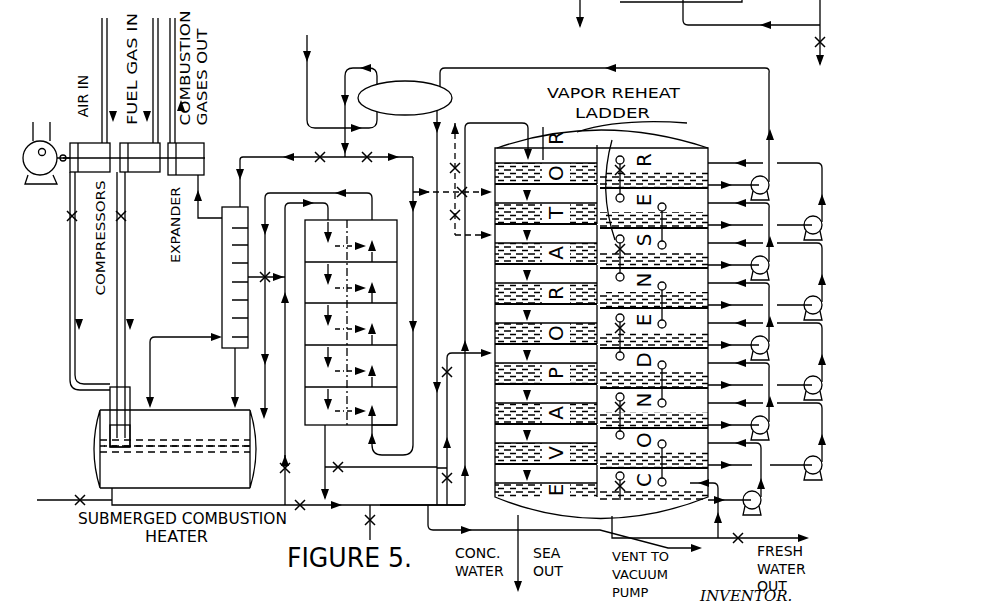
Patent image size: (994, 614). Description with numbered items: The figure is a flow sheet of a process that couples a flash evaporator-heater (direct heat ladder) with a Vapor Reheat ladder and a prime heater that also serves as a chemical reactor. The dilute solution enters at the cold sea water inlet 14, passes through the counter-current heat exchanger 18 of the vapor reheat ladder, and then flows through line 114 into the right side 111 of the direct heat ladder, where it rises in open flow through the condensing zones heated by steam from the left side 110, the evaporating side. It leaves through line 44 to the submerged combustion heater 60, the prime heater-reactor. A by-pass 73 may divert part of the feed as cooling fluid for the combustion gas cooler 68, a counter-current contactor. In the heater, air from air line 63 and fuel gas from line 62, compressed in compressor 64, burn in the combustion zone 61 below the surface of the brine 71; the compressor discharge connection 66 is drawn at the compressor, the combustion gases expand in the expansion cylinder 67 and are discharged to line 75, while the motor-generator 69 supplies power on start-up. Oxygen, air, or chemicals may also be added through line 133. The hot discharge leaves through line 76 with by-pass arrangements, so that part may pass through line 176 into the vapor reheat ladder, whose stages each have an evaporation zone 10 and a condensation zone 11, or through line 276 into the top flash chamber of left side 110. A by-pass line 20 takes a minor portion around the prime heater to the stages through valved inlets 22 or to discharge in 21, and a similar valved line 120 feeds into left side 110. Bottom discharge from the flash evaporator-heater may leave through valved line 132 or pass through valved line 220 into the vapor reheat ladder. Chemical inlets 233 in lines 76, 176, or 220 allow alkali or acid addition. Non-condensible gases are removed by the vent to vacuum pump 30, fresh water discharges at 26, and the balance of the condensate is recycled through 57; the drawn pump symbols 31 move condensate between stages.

The evaporation zone 10 is at (506, 305).
The condensation zone 11 is at (708, 150).
The cold sea water inlet 14 is at (299, 63).
The counter-current heat exchanger 18 is at (416, 108).
The by-pass line 20 is at (409, 190).
The discharge 21 is at (470, 122).
The valved inlets 22 is at (452, 250).
The fresh water discharge 26 is at (757, 538).
The vent to vacuum pump 30 is at (738, 118).
The circulating pump 31 is at (150, 359).
The discharge line 44 is at (316, 297).
The condensate recycle line 57 is at (718, 486).
The submerged combustion heater 60 is at (96, 450).
The combustion zone 61 is at (108, 411).
The fuel gas line 62 is at (158, 30).
The air line 63 is at (102, 50).
The compressor 64 is at (150, 172).
The compressor discharge line 66 is at (163, 172).
The expansion cylinder 67 is at (204, 162).
The combustion gas cooler 68 is at (222, 297).
The motor-generator 69 is at (47, 186).
The brine 71 is at (128, 450).
The by-pass 73 is at (267, 157).
The discharge line 75 is at (176, 26).
The discharge line 76 is at (255, 505).
The left side of the direct heat ladder 110 is at (305, 425).
The right side of the direct heat ladder 111 is at (397, 425).
The line 114 is at (419, 150).
The valved line 120 is at (288, 332).
The valved discharge line 132 is at (432, 513).
The oxygen or air line 133 is at (70, 272).
The line 176 is at (385, 506).
The valved line 220 is at (411, 472).
The chemical inlets 233 is at (264, 444).
The line 276 is at (297, 480).